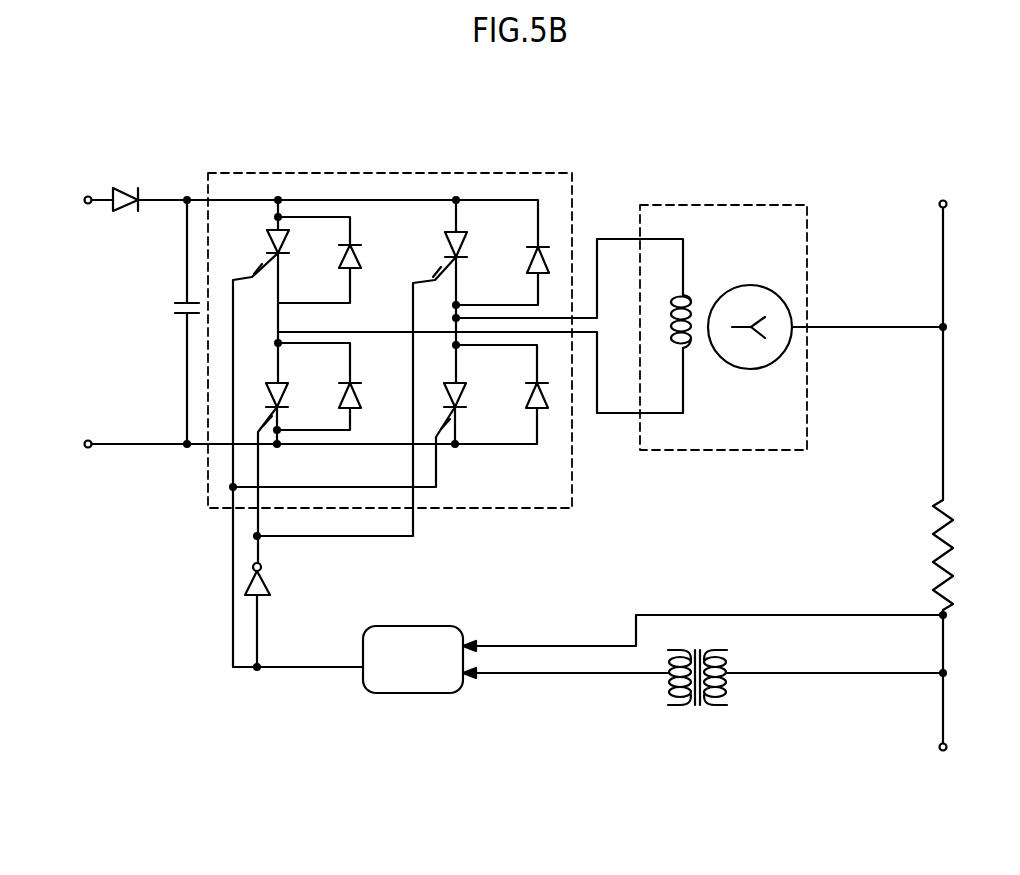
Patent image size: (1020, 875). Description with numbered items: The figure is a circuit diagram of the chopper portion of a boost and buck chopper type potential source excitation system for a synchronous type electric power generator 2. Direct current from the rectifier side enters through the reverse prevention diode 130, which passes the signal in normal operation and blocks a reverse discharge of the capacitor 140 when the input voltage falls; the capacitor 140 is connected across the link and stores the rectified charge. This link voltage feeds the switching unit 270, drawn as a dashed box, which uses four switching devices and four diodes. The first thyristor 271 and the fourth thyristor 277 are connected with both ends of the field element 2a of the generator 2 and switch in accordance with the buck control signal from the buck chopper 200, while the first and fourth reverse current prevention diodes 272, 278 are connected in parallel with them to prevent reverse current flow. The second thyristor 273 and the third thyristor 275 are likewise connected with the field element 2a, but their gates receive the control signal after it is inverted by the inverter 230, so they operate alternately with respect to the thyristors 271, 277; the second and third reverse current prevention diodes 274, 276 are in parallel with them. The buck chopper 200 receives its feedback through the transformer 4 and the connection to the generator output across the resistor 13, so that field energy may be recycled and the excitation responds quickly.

The reverse prevention diode 130 is at (131, 192).
The capacitor 140 is at (173, 308).
The first thyristor 271 is at (266, 242).
The first reverse current prevention diode 272 is at (352, 263).
The second thyristor 273 is at (263, 400).
The second reverse current prevention diode 274 is at (360, 392).
The third thyristor 275 is at (454, 226).
The third reverse current prevention diode 276 is at (548, 252).
The fourth thyristor 277 is at (467, 405).
The fourth reverse current prevention diode 278 is at (550, 397).
The buck chopper switching unit 270 is at (498, 509).
The inverter 230 is at (262, 566).
The buck chopper 200 is at (443, 625).
The electric power generator 2 is at (755, 205).
The field element 2a is at (688, 348).
The resistor 13 is at (932, 548).
The transformer 4 is at (735, 664).